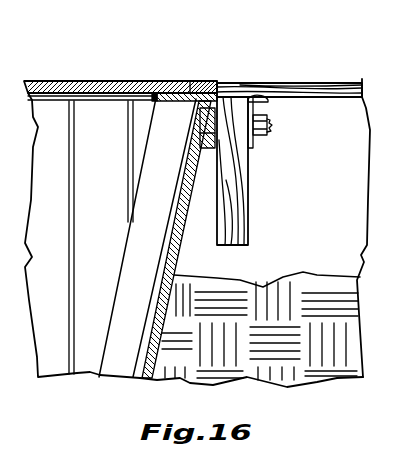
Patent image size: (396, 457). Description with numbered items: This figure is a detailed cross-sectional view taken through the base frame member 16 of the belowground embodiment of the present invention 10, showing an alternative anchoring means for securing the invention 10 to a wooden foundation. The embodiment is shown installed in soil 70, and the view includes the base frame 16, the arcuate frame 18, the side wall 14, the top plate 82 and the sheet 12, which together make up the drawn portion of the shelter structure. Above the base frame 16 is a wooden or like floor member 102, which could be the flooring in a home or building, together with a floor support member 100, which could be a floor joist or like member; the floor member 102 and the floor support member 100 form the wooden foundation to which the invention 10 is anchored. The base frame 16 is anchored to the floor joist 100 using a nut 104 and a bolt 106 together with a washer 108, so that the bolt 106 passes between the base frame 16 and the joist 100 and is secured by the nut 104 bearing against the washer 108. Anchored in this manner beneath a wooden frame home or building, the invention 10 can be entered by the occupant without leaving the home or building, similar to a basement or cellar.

The present invention 10 is at (117, 67).
The sheet 12 is at (182, 246).
The side wall 14 is at (53, 117).
The base frame member 16 is at (190, 82).
The arcuate frame 18 is at (148, 251).
The soil 70 is at (312, 380).
The top plate 82 is at (149, 81).
The wooden foundation member 100 is at (249, 198).
The floor member 102 is at (327, 83).
The nut 104 is at (255, 136).
The bolt 106 is at (268, 124).
The washer 108 is at (254, 101).